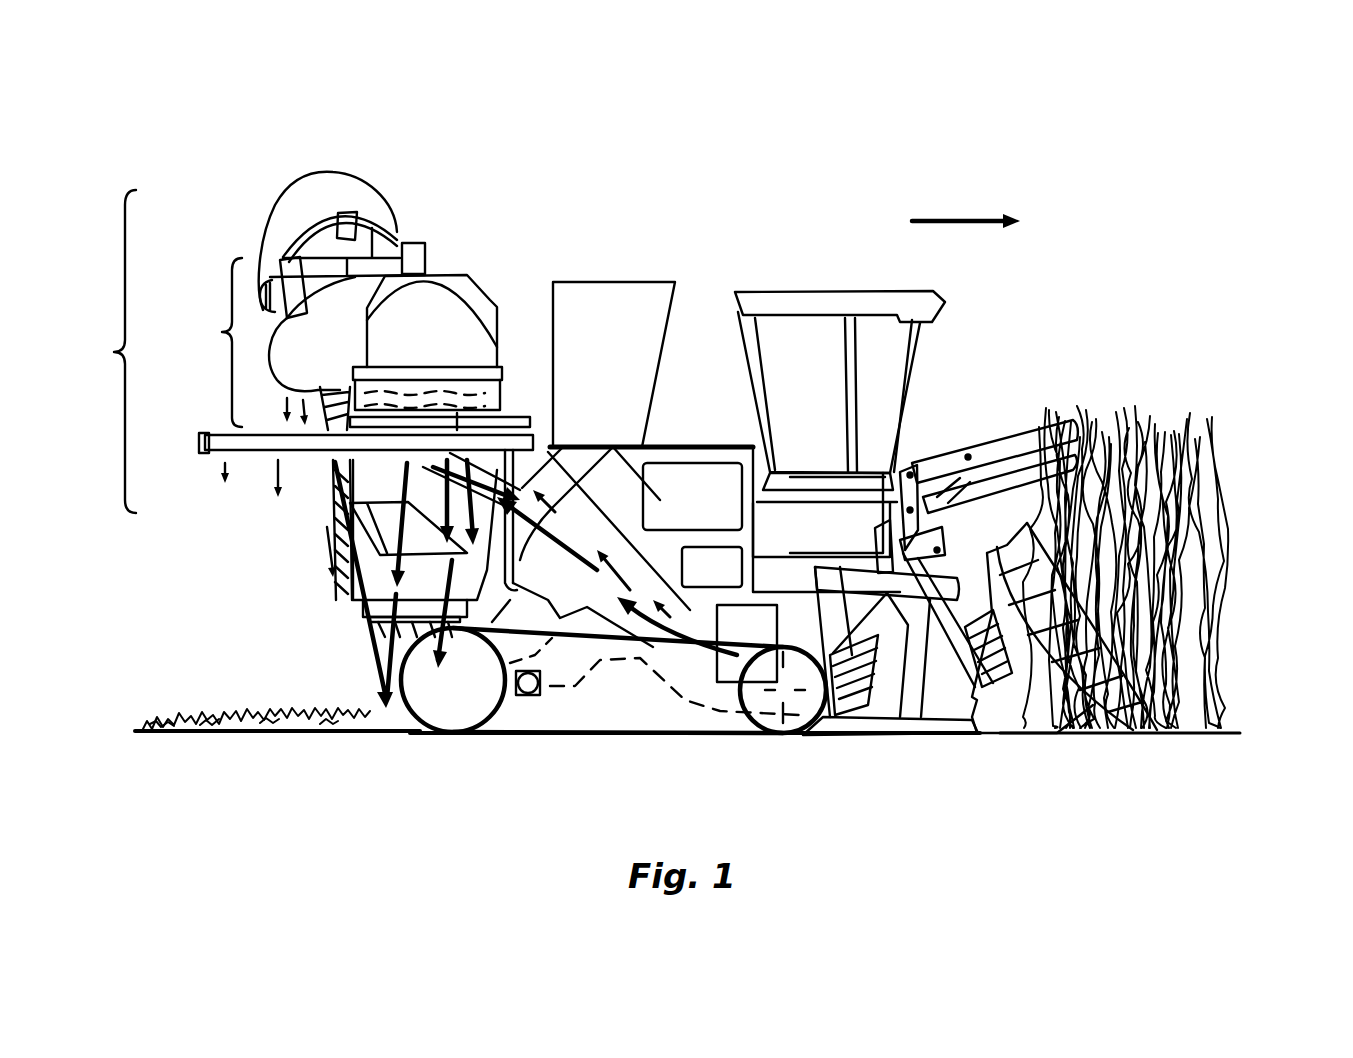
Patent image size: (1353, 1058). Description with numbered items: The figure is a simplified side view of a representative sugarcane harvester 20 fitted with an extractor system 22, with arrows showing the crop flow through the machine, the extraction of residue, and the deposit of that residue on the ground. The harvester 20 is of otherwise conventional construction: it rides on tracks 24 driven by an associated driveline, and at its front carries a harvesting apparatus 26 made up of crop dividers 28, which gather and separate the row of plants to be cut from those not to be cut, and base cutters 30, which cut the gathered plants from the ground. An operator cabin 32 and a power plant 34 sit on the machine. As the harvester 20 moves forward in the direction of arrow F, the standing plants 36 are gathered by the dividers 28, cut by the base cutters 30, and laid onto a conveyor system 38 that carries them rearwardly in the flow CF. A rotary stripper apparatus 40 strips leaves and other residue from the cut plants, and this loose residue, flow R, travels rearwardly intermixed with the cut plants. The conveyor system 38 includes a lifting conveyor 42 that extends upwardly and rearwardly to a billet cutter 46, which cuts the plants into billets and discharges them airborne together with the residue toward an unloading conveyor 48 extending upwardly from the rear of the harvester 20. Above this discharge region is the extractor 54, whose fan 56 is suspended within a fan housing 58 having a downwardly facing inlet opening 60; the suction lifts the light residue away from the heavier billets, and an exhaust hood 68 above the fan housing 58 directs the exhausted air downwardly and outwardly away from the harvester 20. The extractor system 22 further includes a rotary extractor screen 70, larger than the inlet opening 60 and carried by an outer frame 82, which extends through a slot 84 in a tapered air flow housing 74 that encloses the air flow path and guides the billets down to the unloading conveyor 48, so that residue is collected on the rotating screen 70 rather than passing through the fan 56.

The harvester 20 is at (985, 108).
The extractor system 22 is at (107, 351).
The tracks 24 is at (495, 737).
The harvesting apparatus 26 is at (950, 738).
The crop dividers 28 is at (1090, 712).
The base cutters 30 is at (897, 712).
The operator cabin 32 is at (940, 298).
The power plant 34 is at (617, 282).
The standing plants 36 is at (1216, 433).
The conveyor system 38 is at (693, 720).
The rotary stripper apparatus 40 is at (765, 725).
The lifting conveyor 42 is at (627, 447).
The billet cutter 46 is at (532, 447).
The unloading conveyor 48 is at (350, 583).
The extractor 54 is at (353, 342).
The fan 56 is at (393, 392).
The fan housing 58 is at (500, 407).
The inlet opening 60 is at (463, 430).
The exhaust hood 68 is at (320, 315).
The rotary extractor screen 70 is at (230, 428).
The air flow housing 74 is at (343, 510).
The outer frame 82 is at (207, 438).
The slot 84 is at (367, 470).